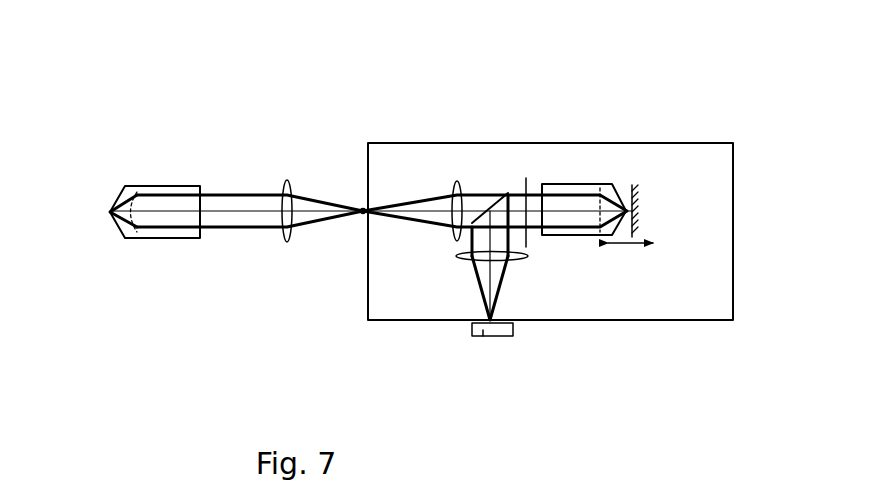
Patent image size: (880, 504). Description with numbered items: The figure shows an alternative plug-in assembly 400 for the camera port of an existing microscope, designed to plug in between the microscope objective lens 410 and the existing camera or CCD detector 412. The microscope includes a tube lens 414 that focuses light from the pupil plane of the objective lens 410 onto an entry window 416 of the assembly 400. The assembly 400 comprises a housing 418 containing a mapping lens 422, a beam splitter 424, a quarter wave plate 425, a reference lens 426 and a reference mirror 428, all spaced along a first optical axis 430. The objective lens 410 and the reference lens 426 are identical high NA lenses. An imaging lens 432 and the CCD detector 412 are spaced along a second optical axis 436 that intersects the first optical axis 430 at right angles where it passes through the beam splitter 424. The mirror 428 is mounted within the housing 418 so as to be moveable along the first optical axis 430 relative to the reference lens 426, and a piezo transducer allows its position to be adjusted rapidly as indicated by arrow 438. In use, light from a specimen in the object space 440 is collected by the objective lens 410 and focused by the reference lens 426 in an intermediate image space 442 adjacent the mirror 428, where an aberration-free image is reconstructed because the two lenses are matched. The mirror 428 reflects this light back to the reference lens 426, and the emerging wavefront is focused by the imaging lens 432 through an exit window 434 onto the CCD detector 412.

The plug-in assembly 400 is at (348, 83).
The objective lens 410 is at (156, 190).
The CCD detector 412 is at (483, 336).
The tube lens 414 is at (287, 238).
The entry window 416 is at (361, 208).
The housing 418 is at (367, 310).
The mapping lens 422 is at (457, 185).
The beam splitter 424 is at (507, 190).
The quarter wave plate 425 is at (526, 185).
The reference lens 426 is at (557, 184).
The reference mirror 428 is at (636, 204).
The first optical axis 430 is at (214, 208).
The imaging lens 432 is at (467, 257).
The exit window 434 is at (463, 322).
The second optical axis 436 is at (492, 287).
The arrow 438 is at (636, 254).
The object space 440 is at (110, 228).
The intermediate image space 442 is at (627, 187).